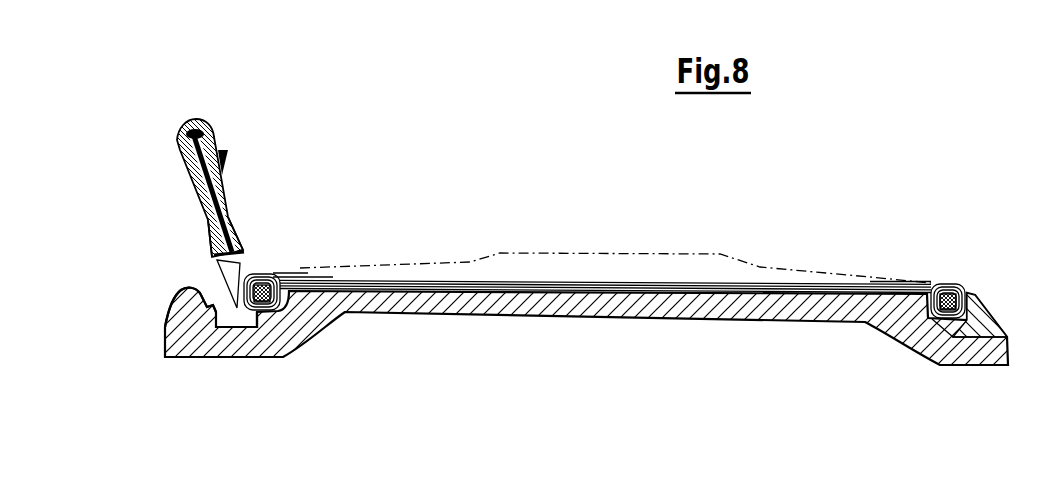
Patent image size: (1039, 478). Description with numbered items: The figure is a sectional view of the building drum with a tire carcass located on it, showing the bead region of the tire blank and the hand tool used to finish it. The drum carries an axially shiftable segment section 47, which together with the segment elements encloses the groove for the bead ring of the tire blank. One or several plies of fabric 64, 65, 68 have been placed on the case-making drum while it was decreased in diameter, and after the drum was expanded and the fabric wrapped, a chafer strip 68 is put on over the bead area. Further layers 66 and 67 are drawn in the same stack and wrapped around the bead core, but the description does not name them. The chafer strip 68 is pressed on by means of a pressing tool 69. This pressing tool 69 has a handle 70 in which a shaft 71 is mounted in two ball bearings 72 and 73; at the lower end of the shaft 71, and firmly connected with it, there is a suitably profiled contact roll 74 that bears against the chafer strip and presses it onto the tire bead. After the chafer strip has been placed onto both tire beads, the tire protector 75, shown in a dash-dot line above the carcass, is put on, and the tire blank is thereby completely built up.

The segment section 47 is at (187, 303).
The ply of fabric 64 is at (777, 292).
The ply of fabric 65 is at (837, 289).
The ply layer 66 is at (880, 286).
The bead core 67 is at (262, 290).
The chafer strip 68 is at (290, 276).
The pressing tool 69 is at (223, 152).
The handle 70 is at (213, 243).
The shaft 71 is at (200, 125).
The ball bearing 72 is at (185, 124).
The ball bearing 73 is at (236, 258).
The contact roll 74 is at (236, 300).
The tire protector 75 is at (553, 263).